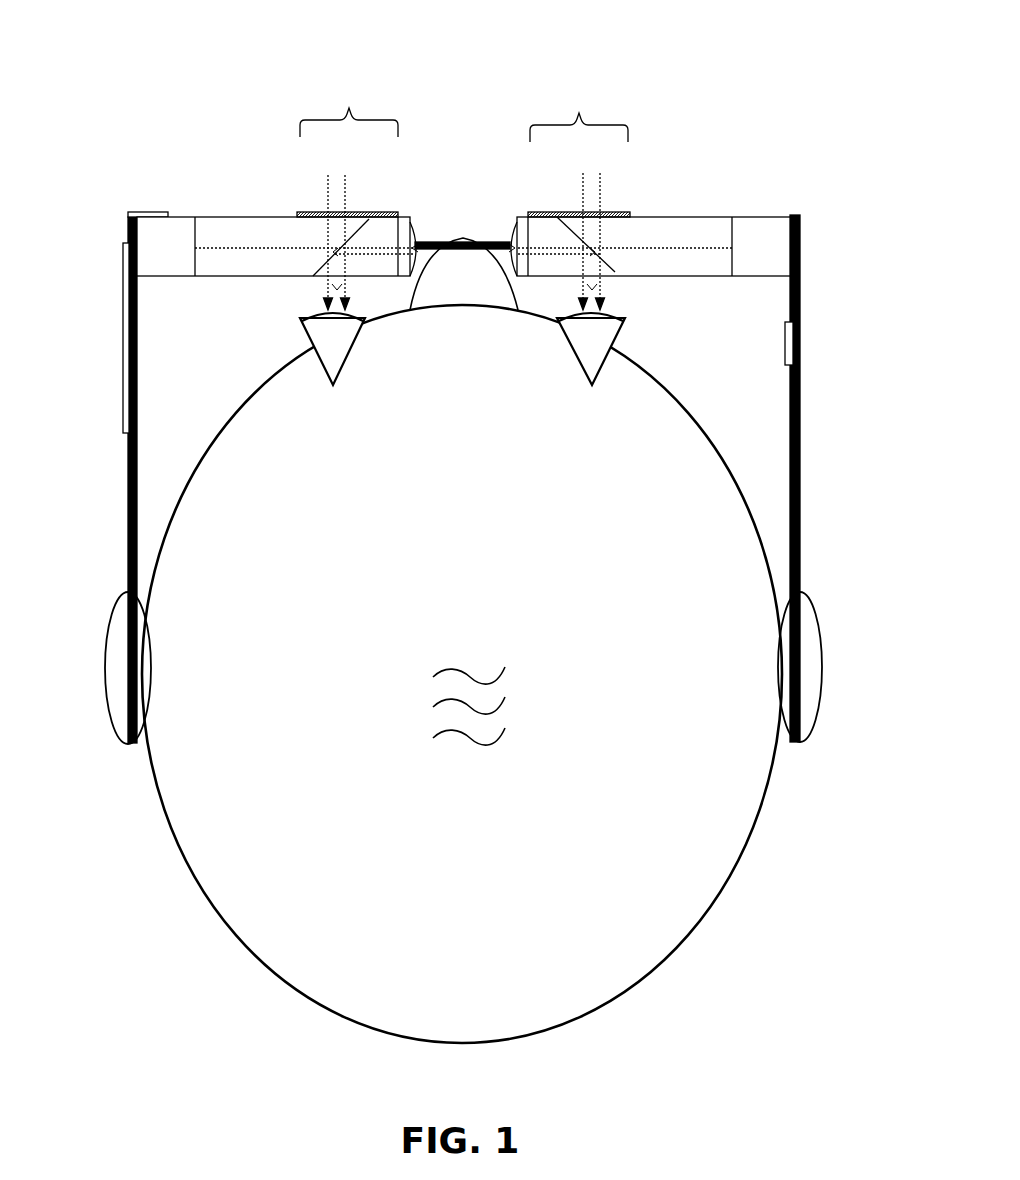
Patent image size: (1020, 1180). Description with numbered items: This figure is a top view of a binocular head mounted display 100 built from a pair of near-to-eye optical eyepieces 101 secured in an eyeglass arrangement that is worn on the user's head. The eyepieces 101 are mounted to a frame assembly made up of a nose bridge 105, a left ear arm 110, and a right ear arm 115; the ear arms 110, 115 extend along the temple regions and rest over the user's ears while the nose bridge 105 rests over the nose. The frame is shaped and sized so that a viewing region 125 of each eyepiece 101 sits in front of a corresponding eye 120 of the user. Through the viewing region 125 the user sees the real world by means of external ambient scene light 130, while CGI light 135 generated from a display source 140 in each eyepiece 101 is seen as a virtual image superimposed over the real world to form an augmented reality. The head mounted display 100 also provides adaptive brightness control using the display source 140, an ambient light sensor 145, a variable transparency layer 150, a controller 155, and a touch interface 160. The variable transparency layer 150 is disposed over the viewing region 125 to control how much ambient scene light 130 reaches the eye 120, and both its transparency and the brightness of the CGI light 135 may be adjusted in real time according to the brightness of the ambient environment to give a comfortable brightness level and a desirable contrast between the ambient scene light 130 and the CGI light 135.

The head mounted display 100 is at (738, 72).
The near-to-eye optical eyepiece 101 is at (160, 125).
The nose bridge 105 is at (495, 242).
The left ear arm 110 is at (128, 475).
The right ear arm 115 is at (800, 475).
The eye 120 is at (343, 370).
The viewing region 125 is at (464, 101).
The ambient scene light 130 is at (326, 196).
The CGI light 135 is at (313, 280).
The display source 140 is at (463, 246).
The ambient light sensor 145 is at (128, 212).
The variable transparency layer 150 is at (370, 212).
The controller 155 is at (793, 340).
The touch interface 160 is at (124, 322).